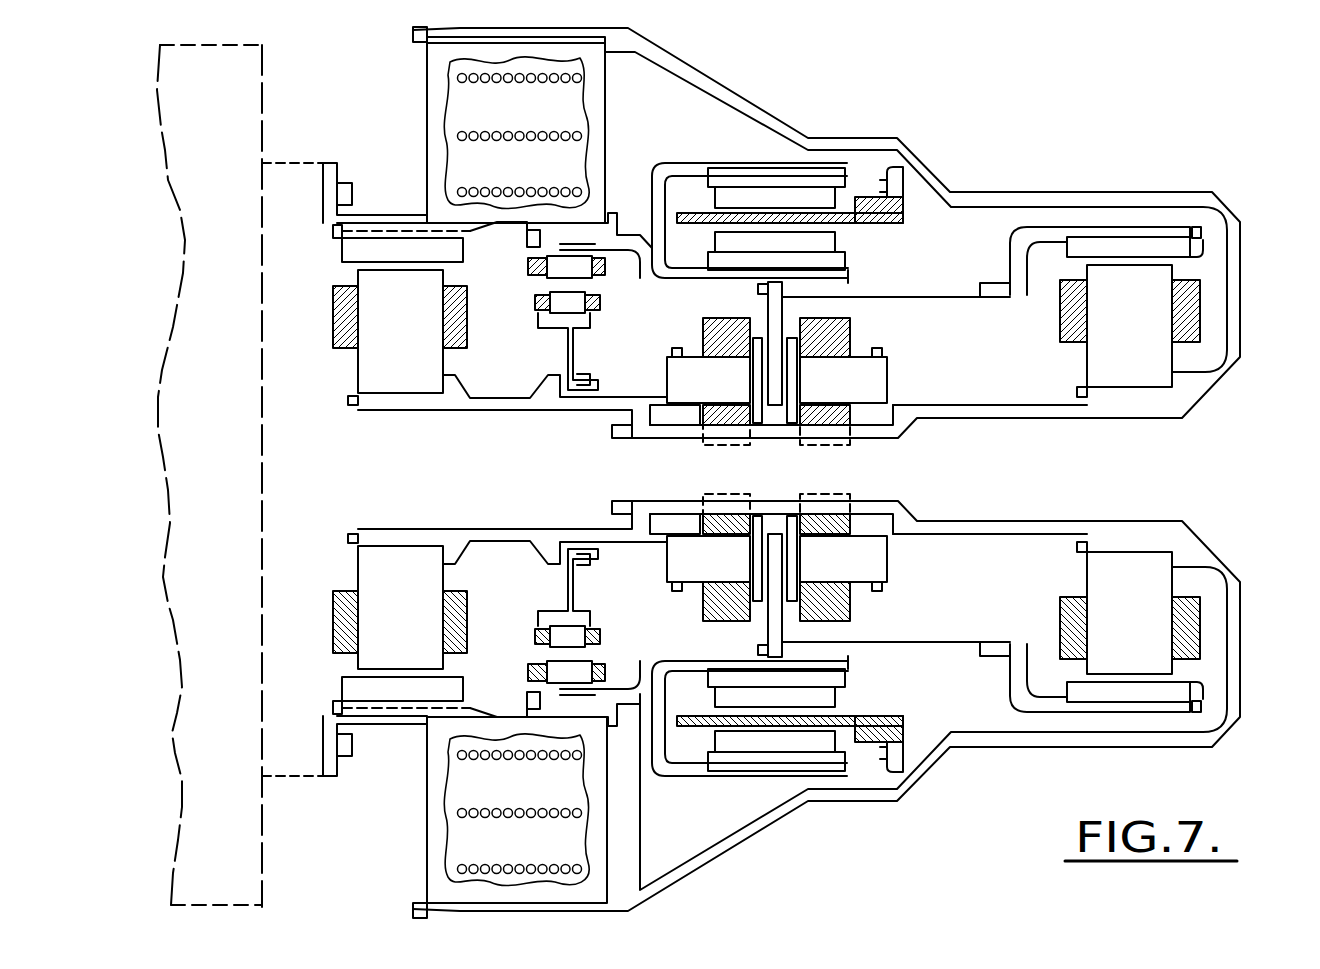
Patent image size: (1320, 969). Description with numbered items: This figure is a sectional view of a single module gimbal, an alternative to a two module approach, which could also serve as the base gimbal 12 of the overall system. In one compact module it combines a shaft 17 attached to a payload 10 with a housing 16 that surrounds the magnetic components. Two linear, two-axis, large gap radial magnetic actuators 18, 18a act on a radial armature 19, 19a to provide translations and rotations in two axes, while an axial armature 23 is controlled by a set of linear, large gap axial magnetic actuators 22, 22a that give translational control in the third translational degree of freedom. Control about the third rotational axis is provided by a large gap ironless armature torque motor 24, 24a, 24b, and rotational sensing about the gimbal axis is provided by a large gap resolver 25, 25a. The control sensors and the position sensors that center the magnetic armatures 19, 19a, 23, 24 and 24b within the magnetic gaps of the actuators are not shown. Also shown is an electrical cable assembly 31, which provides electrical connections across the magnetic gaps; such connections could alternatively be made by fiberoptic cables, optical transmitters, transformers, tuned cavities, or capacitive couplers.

The payload 10 is at (161, 130).
The base gimbal 12 is at (856, 828).
The housing 16 is at (1241, 332).
The shaft 17 is at (1156, 226).
The radial magnetic actuator 18 is at (1060, 336).
The radial magnetic actuator 18a is at (334, 348).
The radial armature 19 is at (1204, 249).
The radial armature 19a is at (330, 240).
The axial magnetic actuator 22 is at (852, 336).
The axial magnetic actuator 22a is at (703, 336).
The axial armature 23 is at (775, 406).
The ironless armature torque motor 24 is at (761, 168).
The ironless armature torque motor 24a is at (886, 168).
The ironless armature torque motor 24b is at (849, 262).
The resolver 25 is at (538, 306).
The resolver 25a is at (529, 268).
The electrical cable assembly 31 is at (427, 86).